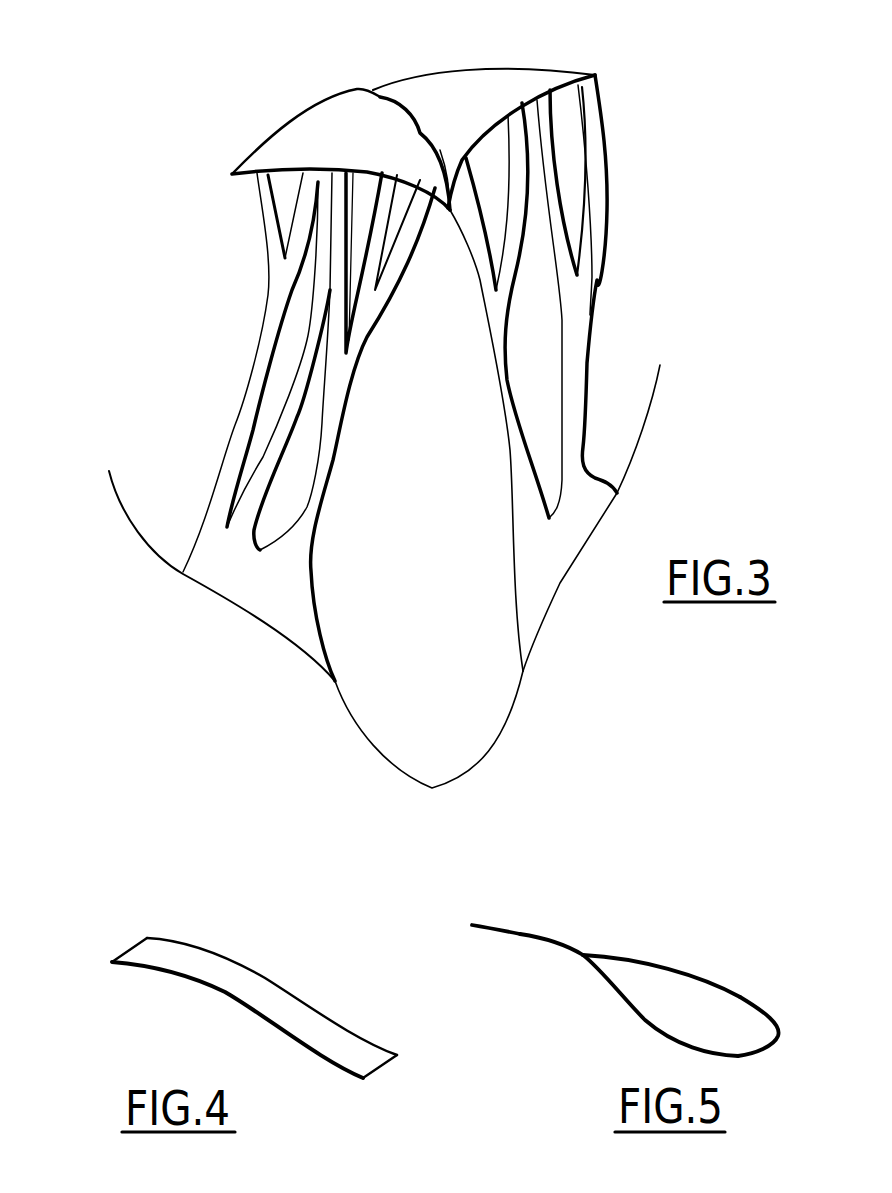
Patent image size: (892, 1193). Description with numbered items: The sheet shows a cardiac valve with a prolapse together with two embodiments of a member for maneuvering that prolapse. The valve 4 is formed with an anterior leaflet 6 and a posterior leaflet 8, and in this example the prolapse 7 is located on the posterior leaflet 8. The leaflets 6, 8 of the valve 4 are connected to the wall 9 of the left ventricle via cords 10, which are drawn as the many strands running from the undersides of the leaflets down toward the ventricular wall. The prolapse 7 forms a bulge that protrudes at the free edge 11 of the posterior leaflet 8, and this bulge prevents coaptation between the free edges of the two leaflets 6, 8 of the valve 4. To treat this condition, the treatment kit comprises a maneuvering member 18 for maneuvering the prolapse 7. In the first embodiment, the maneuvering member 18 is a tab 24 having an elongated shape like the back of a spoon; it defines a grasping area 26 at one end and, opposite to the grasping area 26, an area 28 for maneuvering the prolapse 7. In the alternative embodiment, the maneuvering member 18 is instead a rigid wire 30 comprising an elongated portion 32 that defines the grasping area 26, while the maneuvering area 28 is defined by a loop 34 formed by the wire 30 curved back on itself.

In FIG. 3, the valve 4 is at (421, 106).
In FIG. 3, the anterior leaflet 6 is at (339, 127).
In FIG. 3, the prolapse 7 is at (426, 133).
In FIG. 3, the posterior leaflet 8 is at (525, 66).
In FIG. 3, the wall of the left ventricle 9 is at (134, 543).
In FIG. 3, the cords 10 is at (222, 375).
In FIG. 3, the free edge 11 is at (452, 158).
In FIG. 4, the maneuvering member 18 is at (219, 964).
In FIG. 5, the maneuvering member 18 is at (640, 949).
In FIG. 4, the tab 24 is at (266, 968).
In FIG. 4, the grasping area 26 is at (128, 967).
In FIG. 5, the grasping area 26 is at (508, 941).
In FIG. 4, the maneuvering area 28 is at (307, 1058).
In FIG. 5, the maneuvering area 28 is at (627, 1028).
In FIG. 5, the rigid wire 30 is at (651, 954).
In FIG. 5, the elongated portion 32 is at (513, 921).
In FIG. 5, the loop 34 is at (741, 995).